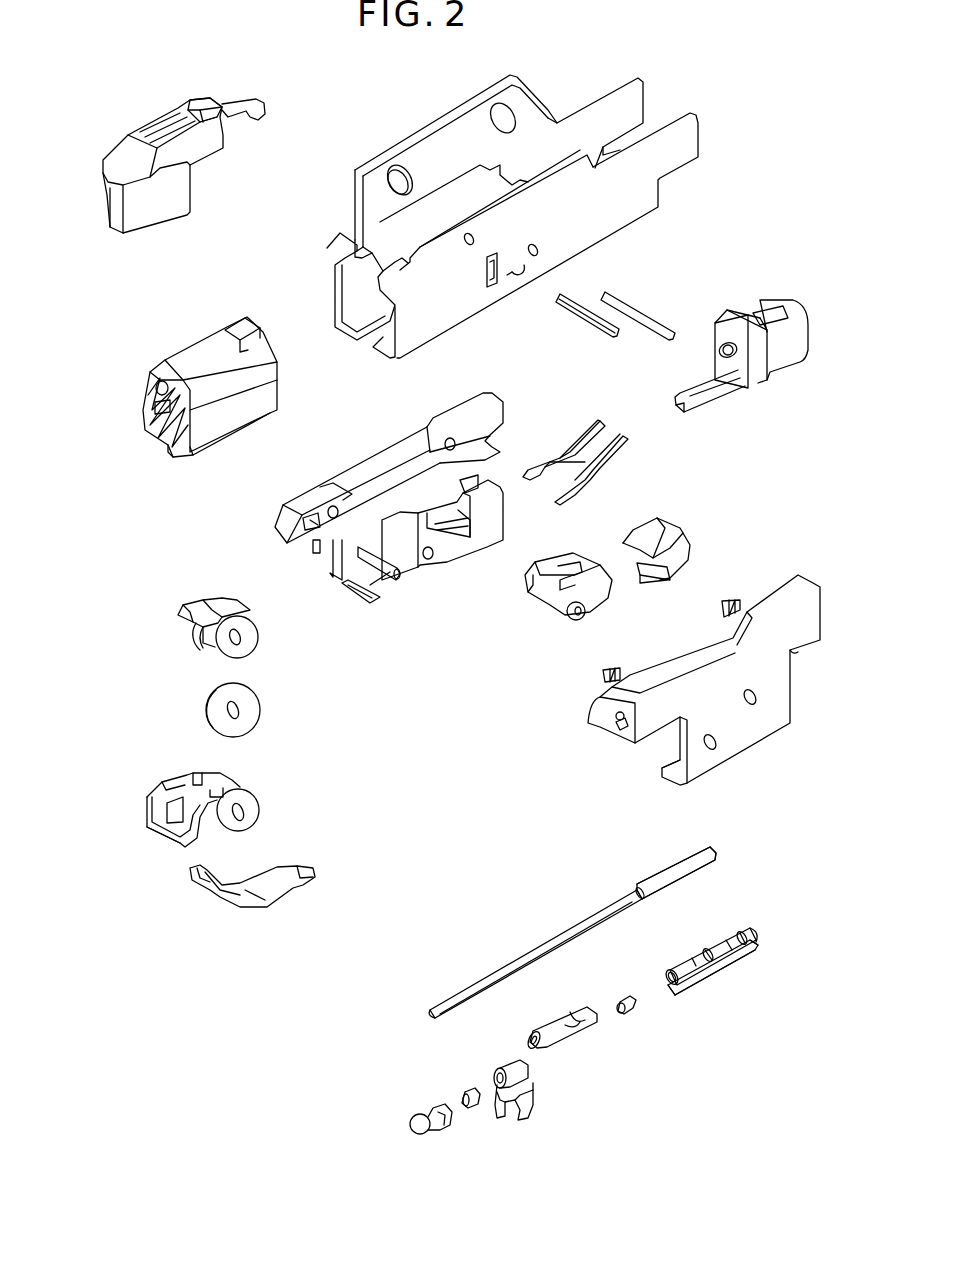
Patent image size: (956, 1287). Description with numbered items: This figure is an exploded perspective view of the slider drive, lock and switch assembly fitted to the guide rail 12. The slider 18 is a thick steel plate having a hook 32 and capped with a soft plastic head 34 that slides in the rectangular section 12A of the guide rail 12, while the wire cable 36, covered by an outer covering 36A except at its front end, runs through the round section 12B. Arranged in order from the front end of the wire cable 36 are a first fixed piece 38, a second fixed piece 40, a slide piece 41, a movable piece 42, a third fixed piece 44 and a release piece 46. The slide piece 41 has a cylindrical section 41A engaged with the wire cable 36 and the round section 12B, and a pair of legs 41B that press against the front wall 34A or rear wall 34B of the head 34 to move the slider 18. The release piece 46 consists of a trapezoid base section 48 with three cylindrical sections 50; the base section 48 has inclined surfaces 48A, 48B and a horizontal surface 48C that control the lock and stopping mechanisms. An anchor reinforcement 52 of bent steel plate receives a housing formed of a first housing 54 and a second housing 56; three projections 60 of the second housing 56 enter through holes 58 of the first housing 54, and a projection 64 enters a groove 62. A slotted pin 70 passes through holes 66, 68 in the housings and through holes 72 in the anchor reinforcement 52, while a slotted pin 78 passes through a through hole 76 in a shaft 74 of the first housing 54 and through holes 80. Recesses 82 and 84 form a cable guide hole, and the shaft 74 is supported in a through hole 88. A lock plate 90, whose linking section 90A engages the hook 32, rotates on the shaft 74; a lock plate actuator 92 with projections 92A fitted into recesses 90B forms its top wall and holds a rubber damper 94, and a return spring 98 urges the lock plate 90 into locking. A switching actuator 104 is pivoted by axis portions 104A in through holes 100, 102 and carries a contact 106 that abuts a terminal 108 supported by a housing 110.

The guide rail 12 is at (172, 377).
The rectangular section of guide rail 12A is at (160, 410).
The round section of guide rail 12B is at (157, 383).
The slider 18 is at (184, 138).
The hook 32 is at (258, 108).
The head 34 is at (197, 100).
The front wall 34A is at (150, 130).
The rear wall 34B is at (213, 98).
The wire cable 36 is at (572, 918).
The outer covering 36A is at (673, 867).
The first fixed piece 38 is at (423, 1117).
The second fixed piece 40 is at (468, 1088).
The slide piece 41 is at (542, 1080).
The cylindrical section 41A is at (518, 1068).
The legs 41B is at (530, 1110).
The movable piece 42 is at (557, 1033).
The third fixed piece 44 is at (627, 1002).
The release piece 46 is at (709, 976).
The base section 48 is at (724, 1001).
The inclined surface 48A is at (677, 993).
The inclined surface 48B is at (748, 952).
The horizontal surface 48C is at (692, 988).
The cylindrical sections 50 is at (667, 972).
The anchor reinforcement 52 is at (512, 205).
The first housing 54 is at (386, 515).
The second housing 56 is at (692, 687).
The through holes 58 is at (450, 438).
The projections 60 is at (737, 600).
The groove 62 is at (362, 600).
The projection 64 is at (665, 770).
The hole 66 is at (310, 528).
The hole 68 is at (620, 718).
The slotted pin 70 is at (593, 318).
The through holes 72 is at (470, 247).
The shaft 74 is at (383, 562).
The through hole 76 is at (397, 575).
The slotted pin 78 is at (647, 313).
The through holes 80 is at (540, 245).
The recess 82 is at (318, 555).
The recess 84 is at (623, 728).
The through hole 88 is at (717, 743).
The lock plate 90 is at (201, 813).
The linking section 90A is at (162, 838).
The recesses 90B is at (193, 783).
The lock plate actuator 92 is at (204, 615).
The projections 92A is at (273, 648).
The rubber damper 94 is at (218, 703).
The return spring 98 is at (283, 867).
The through hole 100 is at (427, 503).
The through hole 102 is at (760, 697).
The switching actuator 104 is at (550, 583).
The axis portions 104A is at (580, 617).
The contact 106 is at (650, 528).
The terminal 108 is at (560, 433).
The housing 110 is at (763, 312).